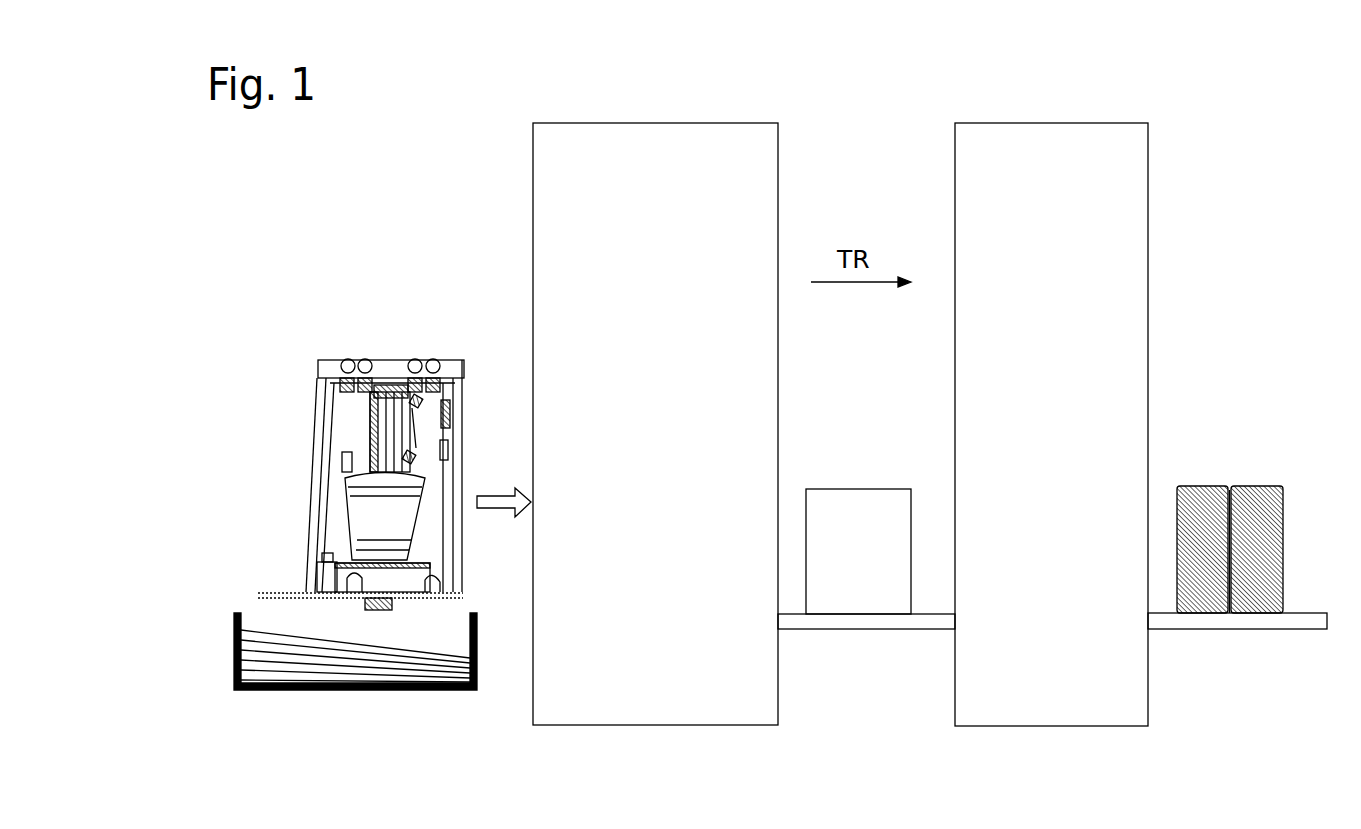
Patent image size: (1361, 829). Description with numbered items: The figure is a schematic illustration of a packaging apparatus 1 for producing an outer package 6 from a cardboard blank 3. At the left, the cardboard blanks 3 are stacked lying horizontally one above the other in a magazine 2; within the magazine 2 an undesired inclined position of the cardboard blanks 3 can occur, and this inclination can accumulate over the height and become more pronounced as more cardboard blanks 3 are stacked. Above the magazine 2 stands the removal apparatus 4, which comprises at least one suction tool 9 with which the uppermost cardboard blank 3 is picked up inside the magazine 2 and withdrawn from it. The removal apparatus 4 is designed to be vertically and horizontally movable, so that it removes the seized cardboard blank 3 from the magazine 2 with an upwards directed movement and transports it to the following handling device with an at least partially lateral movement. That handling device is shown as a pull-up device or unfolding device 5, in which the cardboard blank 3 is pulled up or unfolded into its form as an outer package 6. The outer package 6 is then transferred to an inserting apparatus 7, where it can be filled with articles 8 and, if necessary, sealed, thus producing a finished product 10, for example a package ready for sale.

The packaging apparatus 1 is at (323, 765).
The magazine 2 is at (478, 650).
The cardboard blank 3 is at (356, 664).
The removal apparatus 4 is at (312, 452).
The pull-up device or unfolding device 5 is at (664, 501).
The outer package 6 is at (855, 489).
The inserting apparatus 7 is at (1070, 501).
The articles 8 is at (1283, 550).
The suction tool 9 is at (385, 608).
The finished product 10 is at (1222, 613).